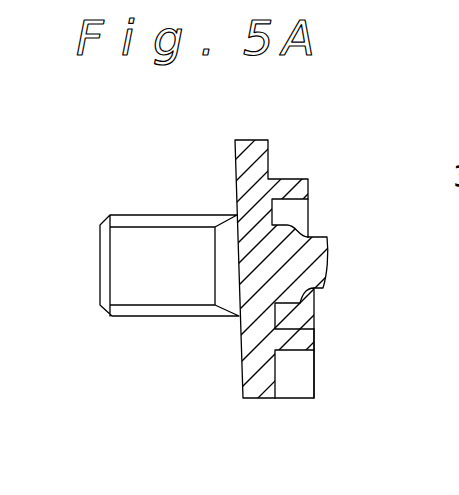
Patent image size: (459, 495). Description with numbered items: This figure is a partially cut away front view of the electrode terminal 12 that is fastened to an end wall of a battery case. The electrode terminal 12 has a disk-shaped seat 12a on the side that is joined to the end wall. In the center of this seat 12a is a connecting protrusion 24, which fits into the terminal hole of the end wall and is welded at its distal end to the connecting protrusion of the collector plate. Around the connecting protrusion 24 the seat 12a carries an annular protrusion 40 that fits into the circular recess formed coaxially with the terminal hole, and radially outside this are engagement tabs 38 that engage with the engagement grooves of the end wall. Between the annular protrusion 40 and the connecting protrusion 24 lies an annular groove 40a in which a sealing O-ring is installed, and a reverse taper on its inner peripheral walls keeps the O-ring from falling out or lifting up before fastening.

The electrode terminal 12 is at (132, 265).
The disk-shaped seat 12a is at (252, 368).
The connecting protrusion 24 is at (326, 244).
The annular groove 40a is at (292, 317).
The annular protrusion 40 is at (295, 340).
The engagement tab 38 is at (296, 380).